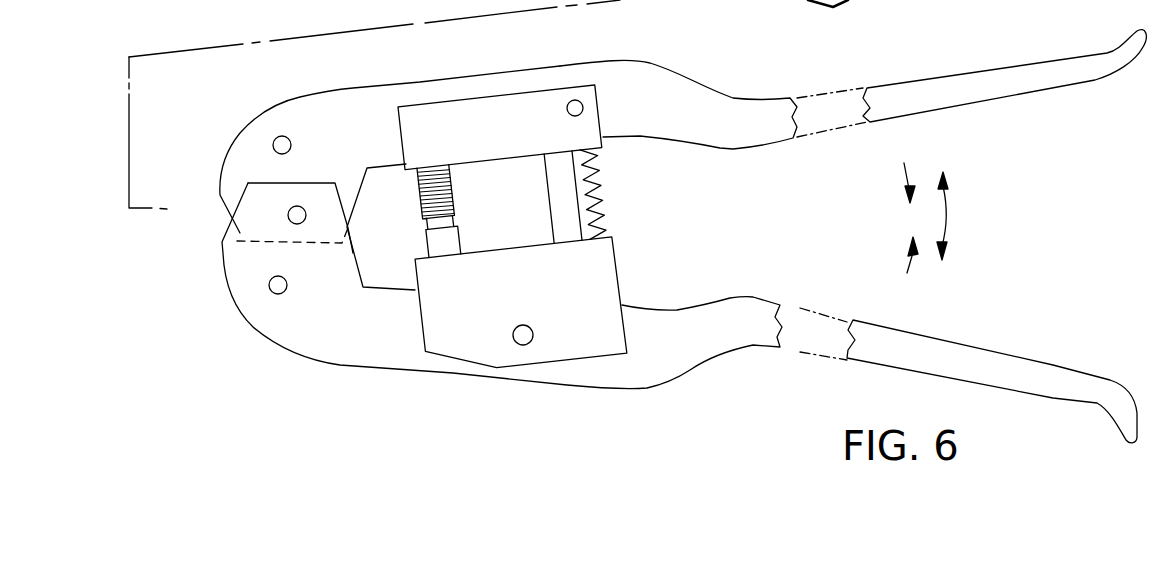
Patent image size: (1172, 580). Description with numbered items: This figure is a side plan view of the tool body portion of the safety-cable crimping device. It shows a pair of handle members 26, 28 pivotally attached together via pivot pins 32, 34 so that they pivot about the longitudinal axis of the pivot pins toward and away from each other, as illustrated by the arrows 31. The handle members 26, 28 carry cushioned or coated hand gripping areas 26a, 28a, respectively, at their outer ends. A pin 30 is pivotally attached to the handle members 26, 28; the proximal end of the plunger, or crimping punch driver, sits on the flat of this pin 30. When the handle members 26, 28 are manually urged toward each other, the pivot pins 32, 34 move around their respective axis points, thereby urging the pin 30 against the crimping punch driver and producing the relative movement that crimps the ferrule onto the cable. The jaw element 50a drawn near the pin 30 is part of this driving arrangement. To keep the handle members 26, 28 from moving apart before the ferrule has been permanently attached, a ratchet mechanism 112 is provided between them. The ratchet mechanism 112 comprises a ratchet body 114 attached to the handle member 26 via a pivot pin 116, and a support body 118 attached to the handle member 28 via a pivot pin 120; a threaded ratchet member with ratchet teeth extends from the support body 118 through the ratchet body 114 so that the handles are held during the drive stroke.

The handle member 26 is at (732, 98).
The hand gripping area 26a is at (1053, 82).
The handle member 28 is at (683, 357).
The hand gripping area 28a is at (1052, 377).
The pin 30 is at (305, 212).
The arrows 31 is at (902, 173).
The pivot pin 32 is at (275, 294).
The pivot pin 34 is at (282, 136).
The jaw 50a is at (280, 223).
The ratchet mechanism 112 is at (636, 231).
The ratchet body 114 is at (600, 147).
The pivot pin 116 is at (583, 108).
The support body 118 is at (613, 292).
The pivot pin 120 is at (525, 345).